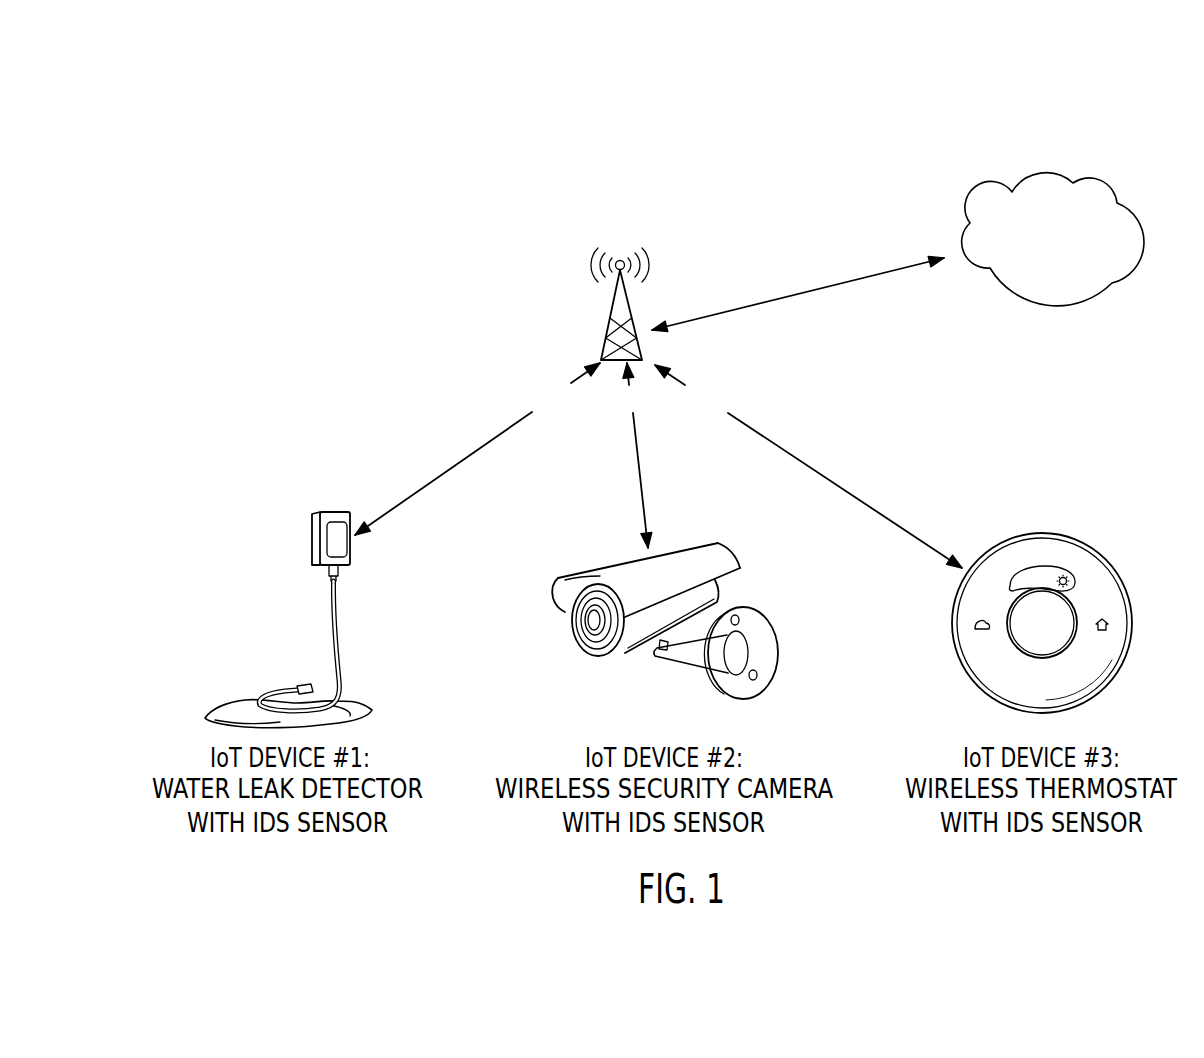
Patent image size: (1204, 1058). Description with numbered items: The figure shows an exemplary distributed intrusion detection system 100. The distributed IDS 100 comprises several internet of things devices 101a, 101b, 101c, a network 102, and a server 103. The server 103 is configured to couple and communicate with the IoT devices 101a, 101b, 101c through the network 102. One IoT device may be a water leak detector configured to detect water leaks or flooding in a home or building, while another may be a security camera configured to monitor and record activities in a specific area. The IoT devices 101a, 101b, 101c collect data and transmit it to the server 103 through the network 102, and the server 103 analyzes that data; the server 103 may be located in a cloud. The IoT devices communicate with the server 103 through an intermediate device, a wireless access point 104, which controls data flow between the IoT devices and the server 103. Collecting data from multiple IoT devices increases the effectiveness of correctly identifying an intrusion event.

The distributed intrusion detection system 100 is at (1064, 78).
The IoT device 101a is at (325, 511).
The IoT device 101b is at (713, 542).
The IoT device 101c is at (1069, 537).
The network 102 is at (453, 465).
The server 103 is at (1084, 180).
The wireless access point 104 is at (640, 246).